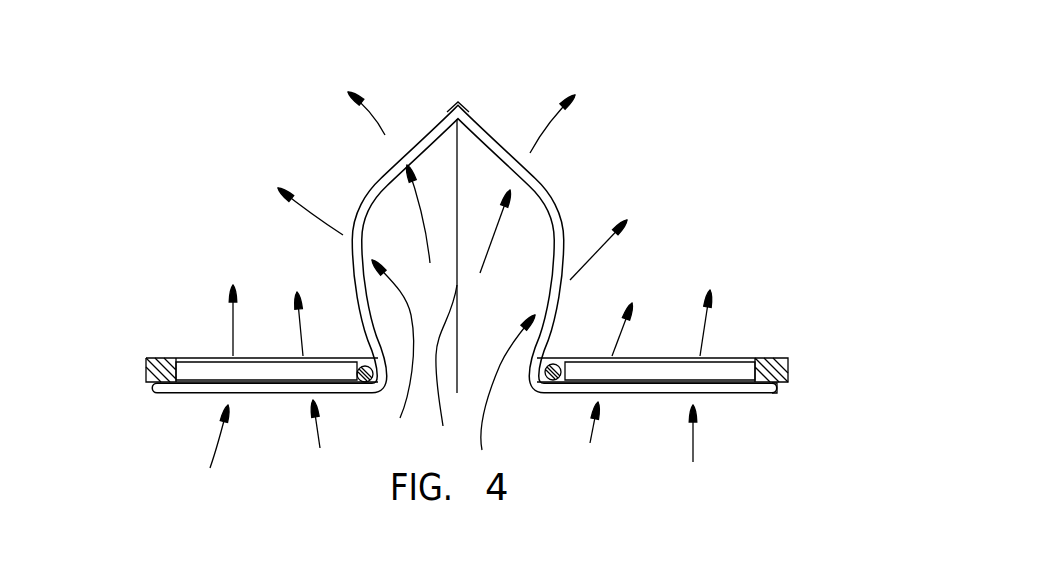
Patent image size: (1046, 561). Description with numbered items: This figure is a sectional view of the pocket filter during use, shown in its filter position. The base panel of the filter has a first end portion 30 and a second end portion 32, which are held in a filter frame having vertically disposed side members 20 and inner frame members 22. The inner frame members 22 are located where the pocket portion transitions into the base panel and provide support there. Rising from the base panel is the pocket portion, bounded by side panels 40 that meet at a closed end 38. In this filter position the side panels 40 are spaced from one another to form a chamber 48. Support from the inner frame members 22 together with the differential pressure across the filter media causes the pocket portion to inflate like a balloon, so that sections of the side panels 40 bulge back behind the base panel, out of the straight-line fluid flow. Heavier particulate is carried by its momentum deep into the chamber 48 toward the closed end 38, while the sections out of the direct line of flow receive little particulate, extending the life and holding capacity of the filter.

The side member 20 is at (148, 356).
The inner frame member 22 is at (358, 364).
The first end portion 30 is at (272, 394).
The second end portion 32 is at (650, 395).
The closed end 38 is at (460, 104).
The side panel 40 is at (356, 203).
The chamber 48 is at (453, 291).